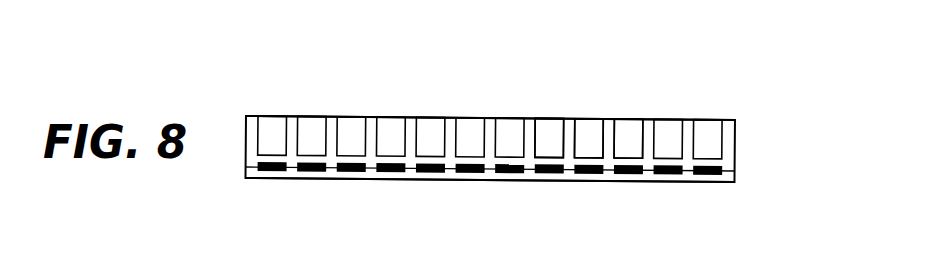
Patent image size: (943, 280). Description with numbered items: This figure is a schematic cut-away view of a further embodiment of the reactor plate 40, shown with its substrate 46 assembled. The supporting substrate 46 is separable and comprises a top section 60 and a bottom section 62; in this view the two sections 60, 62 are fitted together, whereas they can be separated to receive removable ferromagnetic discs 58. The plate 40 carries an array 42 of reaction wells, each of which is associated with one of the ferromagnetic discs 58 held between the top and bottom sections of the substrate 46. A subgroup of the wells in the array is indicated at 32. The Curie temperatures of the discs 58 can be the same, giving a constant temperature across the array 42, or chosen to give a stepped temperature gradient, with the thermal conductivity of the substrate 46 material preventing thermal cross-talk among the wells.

The reactor plate 40 is at (240, 165).
The array 42 is at (726, 97).
The light emitting element group 32 is at (625, 119).
The ferromagnetic discs 58 is at (432, 179).
The supporting substrate 46 is at (743, 159).
The top section 60 is at (735, 131).
The bottom section 62 is at (735, 176).